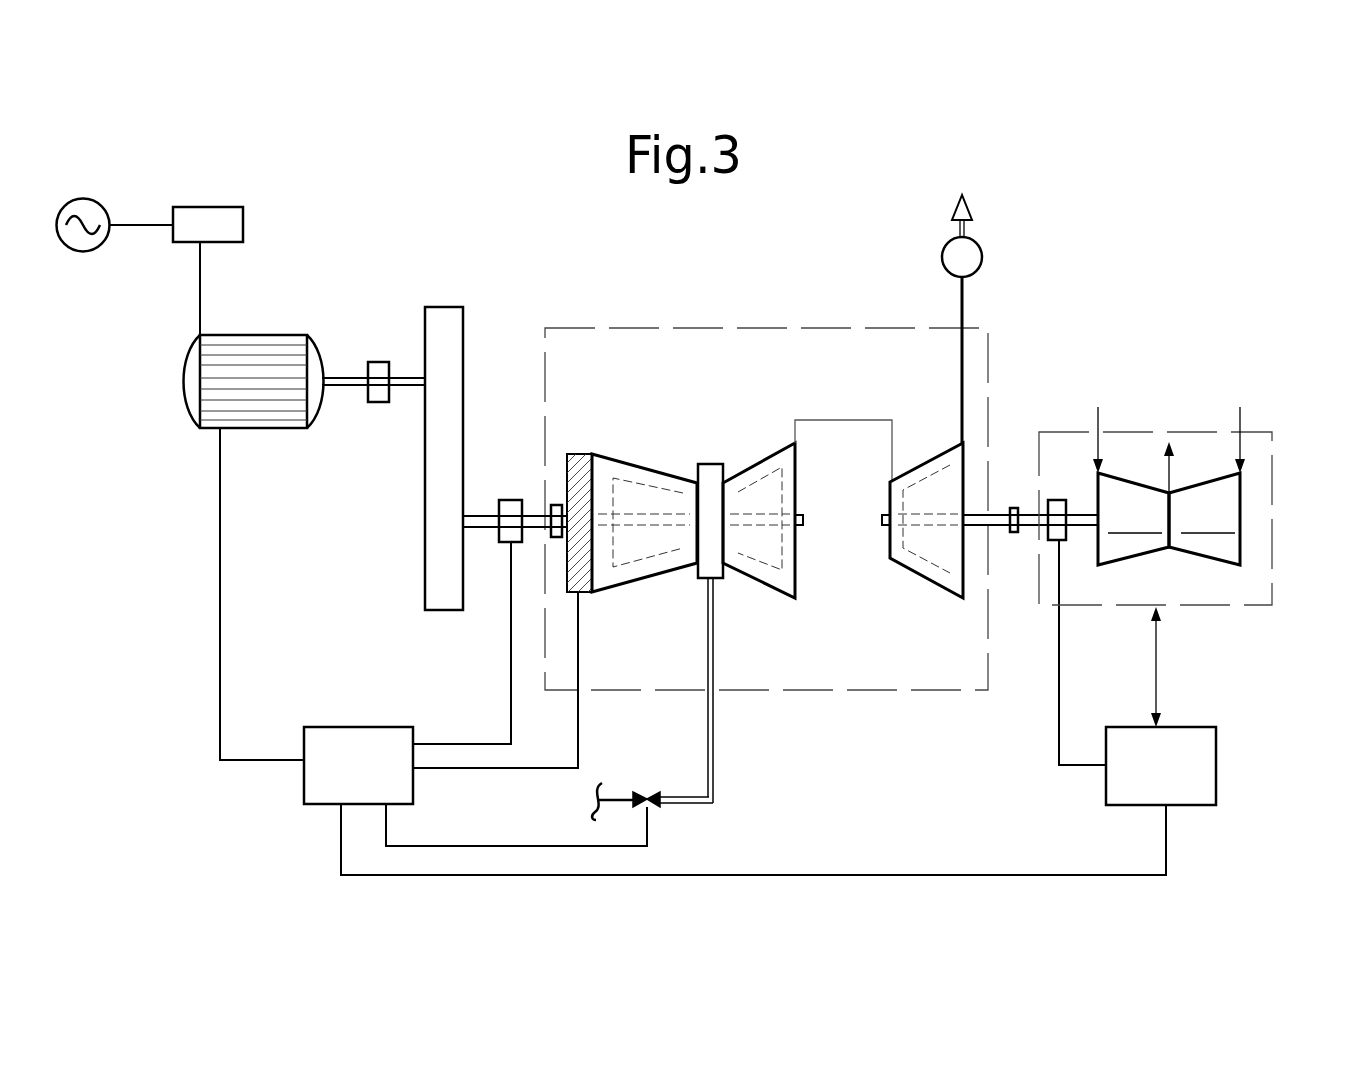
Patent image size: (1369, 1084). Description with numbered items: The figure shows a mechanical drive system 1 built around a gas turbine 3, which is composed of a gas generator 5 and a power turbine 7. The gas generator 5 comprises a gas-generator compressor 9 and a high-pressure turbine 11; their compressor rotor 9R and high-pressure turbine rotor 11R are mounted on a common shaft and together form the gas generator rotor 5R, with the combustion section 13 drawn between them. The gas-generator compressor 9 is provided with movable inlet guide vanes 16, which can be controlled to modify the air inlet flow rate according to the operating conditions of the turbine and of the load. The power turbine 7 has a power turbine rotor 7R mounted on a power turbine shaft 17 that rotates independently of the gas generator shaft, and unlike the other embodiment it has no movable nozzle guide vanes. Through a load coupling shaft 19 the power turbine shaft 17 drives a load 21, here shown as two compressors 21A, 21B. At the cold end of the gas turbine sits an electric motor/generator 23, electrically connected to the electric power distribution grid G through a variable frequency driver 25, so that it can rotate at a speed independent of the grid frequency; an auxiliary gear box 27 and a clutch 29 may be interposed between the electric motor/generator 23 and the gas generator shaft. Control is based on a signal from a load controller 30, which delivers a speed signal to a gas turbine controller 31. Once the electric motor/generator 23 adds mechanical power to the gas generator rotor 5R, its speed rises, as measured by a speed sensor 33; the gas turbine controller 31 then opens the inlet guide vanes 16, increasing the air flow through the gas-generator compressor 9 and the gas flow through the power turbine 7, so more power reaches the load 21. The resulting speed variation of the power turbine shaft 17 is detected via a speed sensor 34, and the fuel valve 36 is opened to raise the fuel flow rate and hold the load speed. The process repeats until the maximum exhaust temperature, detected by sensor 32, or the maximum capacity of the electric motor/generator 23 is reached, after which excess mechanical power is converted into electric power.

The mechanical drive system 1 is at (1212, 333).
The gas turbine 3 is at (807, 695).
The gas generator 5 is at (644, 515).
The gas generator rotor 5R is at (658, 488).
The power turbine 7 is at (922, 514).
The power turbine rotor 7R is at (920, 560).
The gas-generator compressor 9 is at (644, 515).
The compressor rotor 9R is at (633, 547).
The high-pressure turbine 11 is at (770, 515).
The high-pressure turbine rotor 11R is at (763, 568).
The combustor 13 is at (712, 472).
The movable inlet guide vanes 16 is at (577, 470).
The power turbine shaft 17 is at (997, 520).
The load coupling shaft 19 is at (1080, 520).
The load 21 is at (1155, 547).
The compressor 21A is at (1131, 486).
The compressor 21B is at (1207, 486).
The electric motor/generator 23 is at (213, 403).
The variable frequency driver 25 is at (210, 207).
The auxiliary gear box 27 is at (445, 577).
The clutch 29 is at (380, 365).
The load controller 30 is at (1216, 768).
The gas turbine controller 31 is at (347, 743).
The sensor 32 is at (983, 262).
The speed sensor 33 is at (511, 548).
The speed sensor 34 is at (1055, 545).
The fuel valve 36 is at (658, 790).
The electric power distribution grid G is at (87, 197).